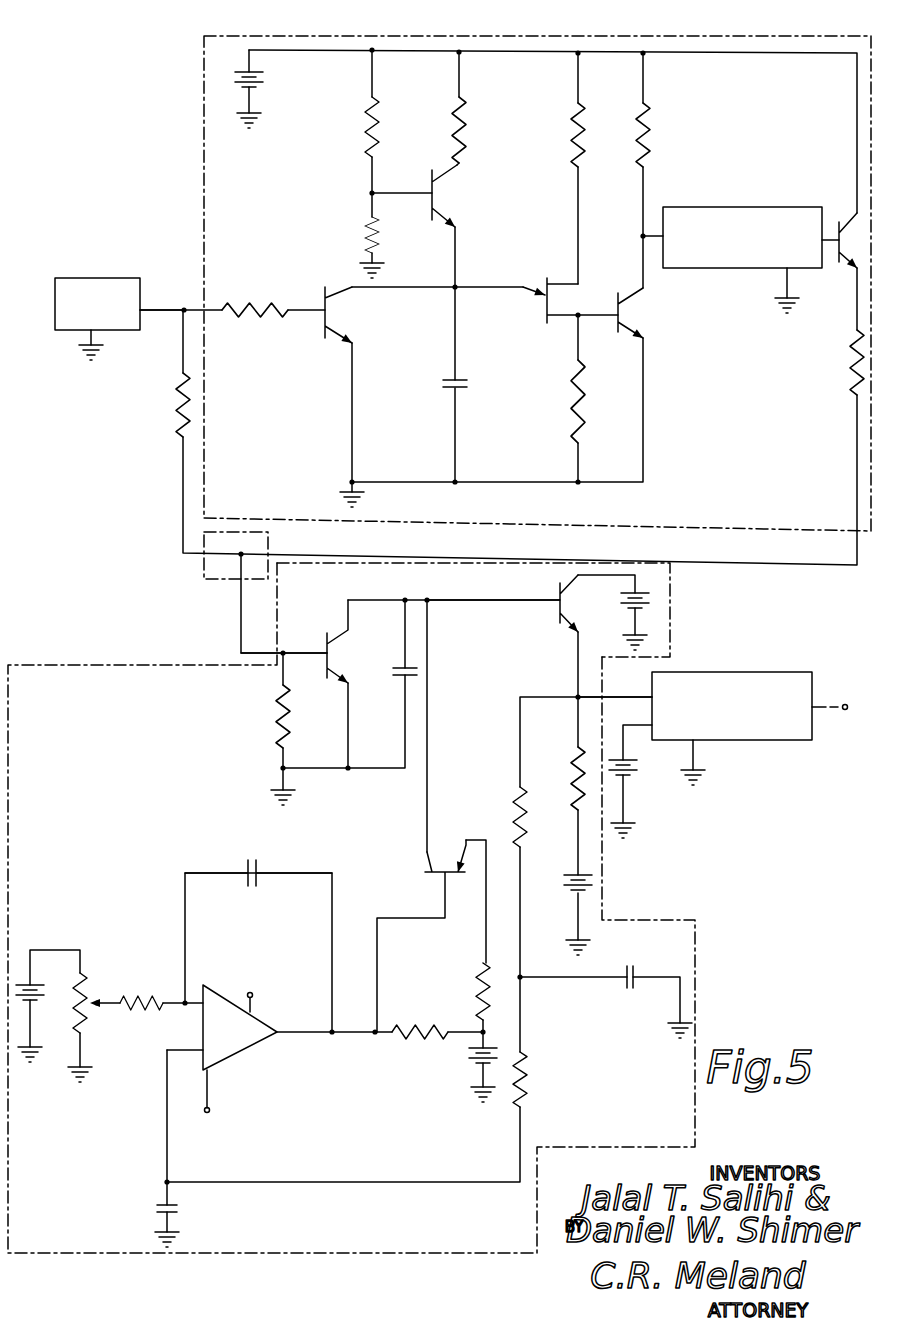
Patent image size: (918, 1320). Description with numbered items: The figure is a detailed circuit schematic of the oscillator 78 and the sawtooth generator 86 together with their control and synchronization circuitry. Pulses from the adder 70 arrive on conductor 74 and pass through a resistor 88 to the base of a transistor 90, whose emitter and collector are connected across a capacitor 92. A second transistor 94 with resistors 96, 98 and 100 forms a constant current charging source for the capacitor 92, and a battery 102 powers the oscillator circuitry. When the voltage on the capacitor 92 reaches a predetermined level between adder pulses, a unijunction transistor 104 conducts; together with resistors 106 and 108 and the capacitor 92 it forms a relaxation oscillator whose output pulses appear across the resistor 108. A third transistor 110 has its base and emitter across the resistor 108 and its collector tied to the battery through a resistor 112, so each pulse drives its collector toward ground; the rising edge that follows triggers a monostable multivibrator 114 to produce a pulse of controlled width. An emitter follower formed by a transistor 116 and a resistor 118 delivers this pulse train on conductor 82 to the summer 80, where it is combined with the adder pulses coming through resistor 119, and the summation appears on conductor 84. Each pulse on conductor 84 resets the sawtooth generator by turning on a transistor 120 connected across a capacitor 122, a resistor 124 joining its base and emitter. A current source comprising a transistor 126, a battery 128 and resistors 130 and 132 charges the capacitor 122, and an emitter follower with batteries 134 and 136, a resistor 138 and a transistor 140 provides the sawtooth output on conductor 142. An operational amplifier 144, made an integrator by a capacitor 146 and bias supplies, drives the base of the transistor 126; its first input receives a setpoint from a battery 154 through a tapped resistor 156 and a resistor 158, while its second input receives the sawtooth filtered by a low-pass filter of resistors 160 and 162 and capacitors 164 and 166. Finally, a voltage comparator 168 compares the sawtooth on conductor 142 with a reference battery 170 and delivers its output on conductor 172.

The adder 70 is at (110, 278).
The conductor 74 is at (159, 314).
The oscillator 78 is at (771, 47).
The summer 80 is at (204, 566).
The conductor 82 is at (372, 556).
The conductor 84 is at (241, 626).
The sawtooth generator 86 is at (135, 664).
The resistor 88 is at (240, 305).
The transistor 90 is at (345, 312).
The capacitor 92 is at (468, 380).
The second transistor 94 is at (445, 196).
The resistor 96 is at (468, 112).
The resistor 98 is at (368, 125).
The resistor 100 is at (366, 240).
The battery 102 is at (262, 75).
The unijunction transistor 104 is at (552, 278).
The resistor 106 is at (585, 112).
The resistor 108 is at (585, 400).
The third transistor 110 is at (640, 318).
The resistor 112 is at (652, 122).
The monostable multivibrator 114 is at (758, 207).
The transistor 116 is at (850, 216).
The resistor 118 is at (845, 355).
The resistor 119 is at (172, 410).
The transistor 120 is at (345, 650).
The capacitor 122 is at (401, 682).
The resistor 124 is at (272, 708).
The transistor 126 is at (425, 872).
The battery 128 is at (473, 1062).
The resistor 130 is at (418, 1042).
The resistor 132 is at (478, 992).
The battery 134 is at (575, 878).
The battery 136 is at (628, 594).
The resistor 138 is at (572, 756).
The transistor 140 is at (555, 612).
The conductor 142 is at (627, 697).
The operational amplifier 144 is at (283, 1036).
The capacitor 146 is at (262, 872).
The battery 154 is at (42, 990).
The resistor 156 is at (92, 990).
The resistor 158 is at (140, 1010).
The resistor 160 is at (512, 810).
The resistor 162 is at (528, 1078).
The capacitor 164 is at (640, 972).
The capacitor 166 is at (180, 1212).
The voltage comparator 168 is at (750, 672).
The battery 170 is at (632, 775).
The conductor 172 is at (825, 706).